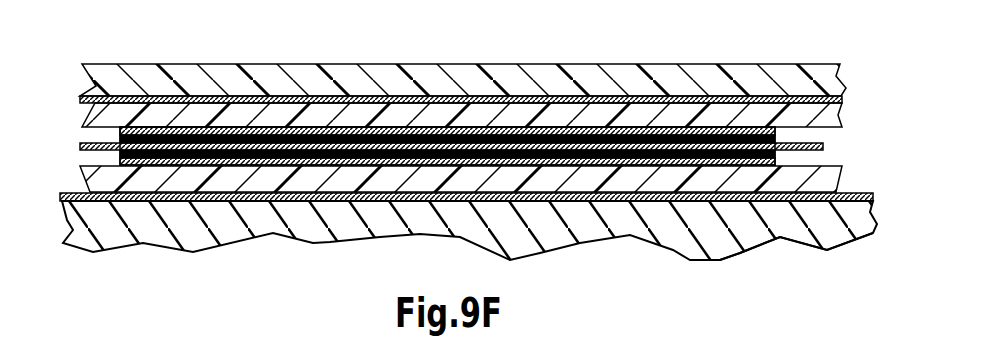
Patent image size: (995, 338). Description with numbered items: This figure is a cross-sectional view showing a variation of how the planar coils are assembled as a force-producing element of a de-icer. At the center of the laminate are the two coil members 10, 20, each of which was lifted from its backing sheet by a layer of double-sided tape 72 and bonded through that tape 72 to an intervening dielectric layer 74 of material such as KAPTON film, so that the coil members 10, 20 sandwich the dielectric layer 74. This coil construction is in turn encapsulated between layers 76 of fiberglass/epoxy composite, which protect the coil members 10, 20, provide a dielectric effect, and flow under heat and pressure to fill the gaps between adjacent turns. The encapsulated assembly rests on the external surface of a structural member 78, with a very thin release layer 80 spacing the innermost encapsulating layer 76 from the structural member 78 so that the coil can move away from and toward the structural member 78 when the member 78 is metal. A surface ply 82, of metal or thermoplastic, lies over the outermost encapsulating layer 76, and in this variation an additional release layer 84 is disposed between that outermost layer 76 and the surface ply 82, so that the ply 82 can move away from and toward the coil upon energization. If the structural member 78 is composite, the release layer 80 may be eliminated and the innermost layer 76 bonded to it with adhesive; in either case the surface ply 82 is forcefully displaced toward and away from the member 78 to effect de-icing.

The member 10 is at (778, 138).
The member 20 is at (718, 157).
The double-sided tape 72 is at (588, 112).
The dielectric layer 74 is at (825, 152).
The layers of composite material 76 is at (806, 112).
The structural member 78 is at (783, 215).
The release layer 80 is at (836, 242).
The surface ply 82 is at (701, 82).
The release layer 84 is at (482, 98).